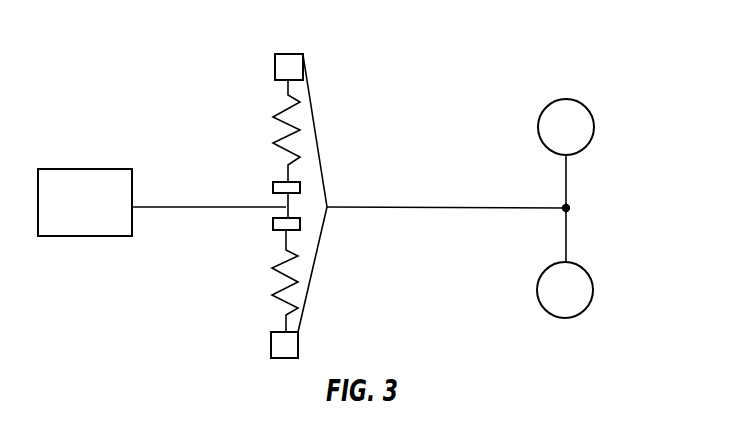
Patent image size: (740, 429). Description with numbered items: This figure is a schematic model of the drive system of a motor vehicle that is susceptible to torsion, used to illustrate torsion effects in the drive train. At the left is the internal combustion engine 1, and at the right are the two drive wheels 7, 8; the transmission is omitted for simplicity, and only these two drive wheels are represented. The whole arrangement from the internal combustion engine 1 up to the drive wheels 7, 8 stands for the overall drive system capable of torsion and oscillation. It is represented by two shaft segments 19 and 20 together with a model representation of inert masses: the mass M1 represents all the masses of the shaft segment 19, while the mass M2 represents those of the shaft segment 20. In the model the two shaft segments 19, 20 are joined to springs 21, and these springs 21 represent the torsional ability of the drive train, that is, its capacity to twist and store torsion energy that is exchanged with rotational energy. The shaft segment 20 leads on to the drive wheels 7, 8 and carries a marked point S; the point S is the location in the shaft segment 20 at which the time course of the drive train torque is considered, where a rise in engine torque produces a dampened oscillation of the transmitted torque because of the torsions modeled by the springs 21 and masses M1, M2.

The internal combustion engine 1 is at (86, 168).
The shaft segment 19 is at (197, 205).
The shaft segment 20 is at (437, 210).
The springs 21 is at (278, 117).
The inert mass m1 M1 is at (273, 188).
The inert mass m2 M2 is at (275, 64).
The point S is at (410, 207).
The drive wheel 7 is at (539, 124).
The drive wheel 8 is at (537, 290).